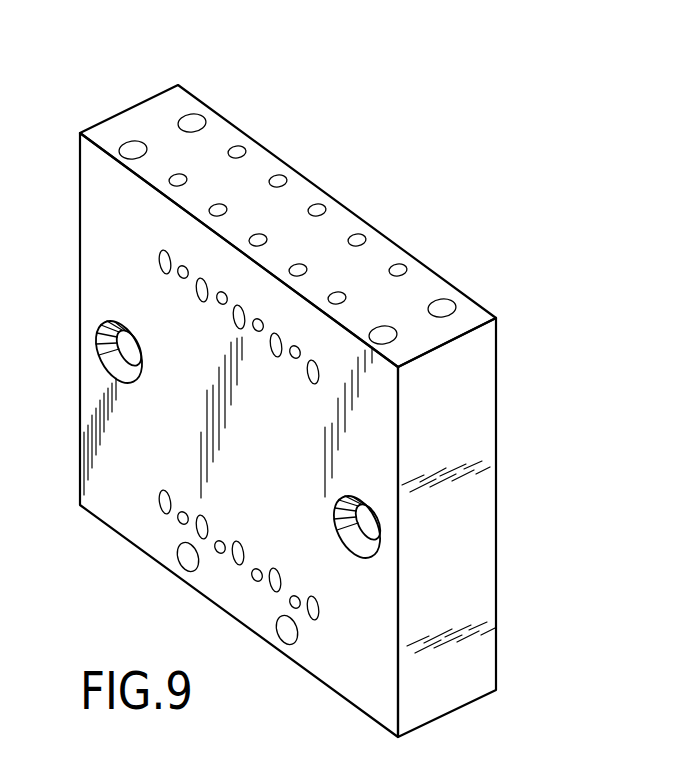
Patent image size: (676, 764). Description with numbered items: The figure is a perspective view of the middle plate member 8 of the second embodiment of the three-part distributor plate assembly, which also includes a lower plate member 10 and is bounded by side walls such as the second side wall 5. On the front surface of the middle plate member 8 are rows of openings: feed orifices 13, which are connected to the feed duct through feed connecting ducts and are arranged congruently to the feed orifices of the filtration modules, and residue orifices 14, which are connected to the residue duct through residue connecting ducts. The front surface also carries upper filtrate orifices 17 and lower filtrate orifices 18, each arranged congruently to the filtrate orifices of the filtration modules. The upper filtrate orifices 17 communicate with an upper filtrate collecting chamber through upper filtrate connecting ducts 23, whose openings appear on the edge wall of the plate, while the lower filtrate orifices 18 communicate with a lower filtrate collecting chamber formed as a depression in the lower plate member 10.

The second side wall 5 is at (485, 532).
The middle plate member 8 is at (502, 451).
The lower plate member 10 is at (132, 105).
The feed orifices 13 is at (160, 496).
The residue orifices 14 is at (158, 257).
The upper filtrate orifices 17 is at (180, 279).
The lower filtrate orifices 18 is at (181, 523).
The upper filtrate connecting ducts 23 is at (398, 268).